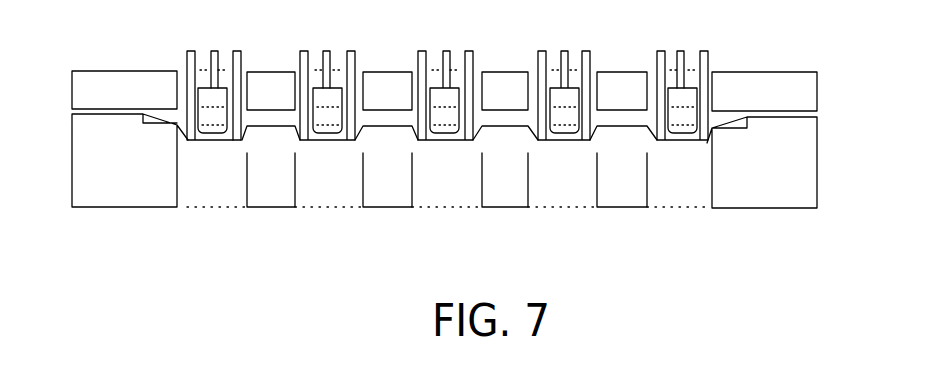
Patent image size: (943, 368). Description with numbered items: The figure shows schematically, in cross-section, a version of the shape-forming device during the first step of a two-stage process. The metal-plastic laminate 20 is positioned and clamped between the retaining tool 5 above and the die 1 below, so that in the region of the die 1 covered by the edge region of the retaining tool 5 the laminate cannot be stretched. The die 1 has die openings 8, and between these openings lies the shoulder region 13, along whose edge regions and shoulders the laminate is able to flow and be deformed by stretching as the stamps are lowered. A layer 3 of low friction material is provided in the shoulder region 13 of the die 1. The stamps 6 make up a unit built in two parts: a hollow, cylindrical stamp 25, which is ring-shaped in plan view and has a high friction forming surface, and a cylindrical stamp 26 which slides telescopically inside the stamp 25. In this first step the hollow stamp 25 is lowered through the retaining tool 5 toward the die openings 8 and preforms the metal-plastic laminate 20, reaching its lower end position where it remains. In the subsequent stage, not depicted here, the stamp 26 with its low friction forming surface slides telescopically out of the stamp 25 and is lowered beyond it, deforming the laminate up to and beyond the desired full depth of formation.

The die 1 is at (792, 162).
The layer 3 is at (380, 135).
The retaining tool 5 is at (792, 92).
The stamp 6 is at (660, 52).
The die openings 8 is at (557, 190).
The shoulder region 13 is at (395, 126).
The metal-plastic laminate 20 is at (270, 126).
The hollow cylindrical stamp 25 is at (188, 139).
The cylindrical stamp 26 is at (207, 118).